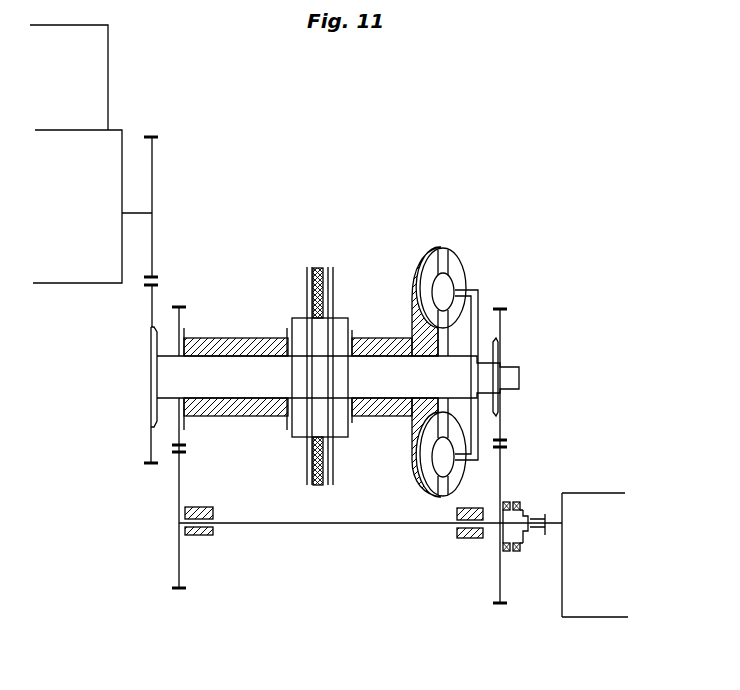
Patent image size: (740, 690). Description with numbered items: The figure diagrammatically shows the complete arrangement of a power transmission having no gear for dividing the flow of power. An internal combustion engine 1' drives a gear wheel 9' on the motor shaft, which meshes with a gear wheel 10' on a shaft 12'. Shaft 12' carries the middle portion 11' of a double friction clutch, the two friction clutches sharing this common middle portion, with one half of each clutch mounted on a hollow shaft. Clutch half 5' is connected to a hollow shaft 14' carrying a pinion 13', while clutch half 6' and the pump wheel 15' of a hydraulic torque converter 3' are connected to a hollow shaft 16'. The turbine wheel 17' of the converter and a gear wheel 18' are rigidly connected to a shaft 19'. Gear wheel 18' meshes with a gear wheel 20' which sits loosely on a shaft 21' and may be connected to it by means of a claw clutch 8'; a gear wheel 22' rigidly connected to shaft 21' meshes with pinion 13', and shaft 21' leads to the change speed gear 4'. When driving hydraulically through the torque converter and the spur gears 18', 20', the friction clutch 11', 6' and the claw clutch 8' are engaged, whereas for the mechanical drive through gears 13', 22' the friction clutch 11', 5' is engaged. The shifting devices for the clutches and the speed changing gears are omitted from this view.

The internal combustion engine 1' is at (91, 154).
The hydraulic torque converter 3' is at (439, 354).
The change speed gear 4' is at (595, 531).
The friction clutch half 5' is at (313, 375).
The friction clutch half 6' is at (346, 374).
The claw clutch 8' is at (526, 511).
The gear wheel on the motor shaft 9' is at (164, 207).
The gear wheel 10' is at (177, 295).
The middle portion of double friction clutch 11' is at (333, 358).
The shaft 12' is at (140, 395).
The pinion 13' is at (149, 331).
The hollow shaft 14' is at (236, 362).
The pump wheel 15' is at (490, 363).
The hollow shaft 16' is at (382, 358).
The turbine wheel 17' is at (466, 363).
The gear wheel 18' is at (524, 361).
The shaft 19' is at (354, 396).
The gear wheel 20' is at (523, 456).
The shaft 21' is at (370, 533).
The gear wheel 22' is at (163, 493).